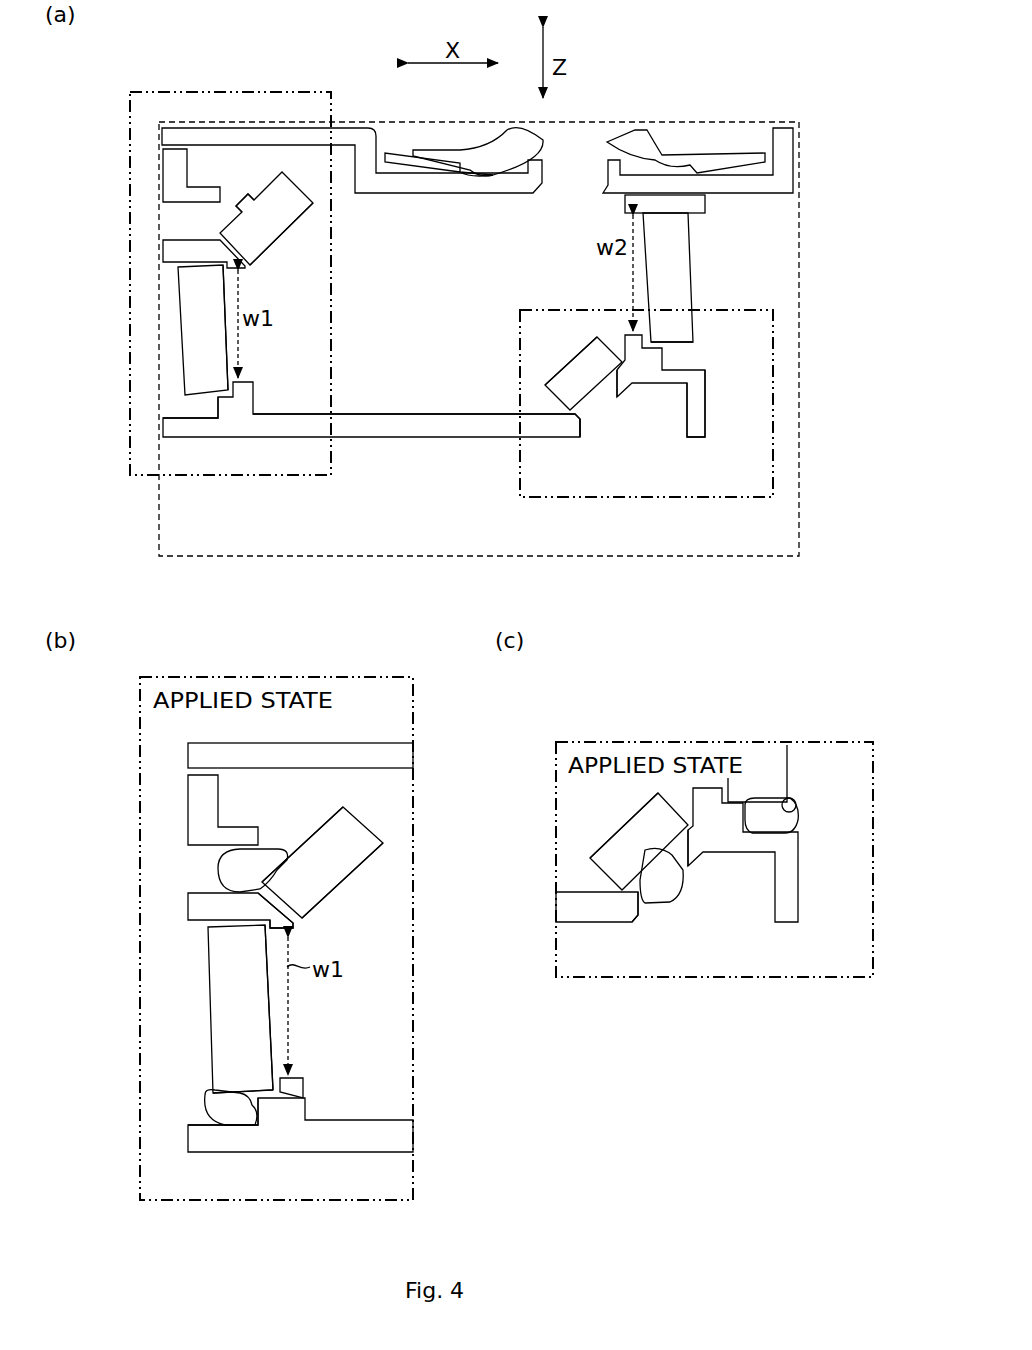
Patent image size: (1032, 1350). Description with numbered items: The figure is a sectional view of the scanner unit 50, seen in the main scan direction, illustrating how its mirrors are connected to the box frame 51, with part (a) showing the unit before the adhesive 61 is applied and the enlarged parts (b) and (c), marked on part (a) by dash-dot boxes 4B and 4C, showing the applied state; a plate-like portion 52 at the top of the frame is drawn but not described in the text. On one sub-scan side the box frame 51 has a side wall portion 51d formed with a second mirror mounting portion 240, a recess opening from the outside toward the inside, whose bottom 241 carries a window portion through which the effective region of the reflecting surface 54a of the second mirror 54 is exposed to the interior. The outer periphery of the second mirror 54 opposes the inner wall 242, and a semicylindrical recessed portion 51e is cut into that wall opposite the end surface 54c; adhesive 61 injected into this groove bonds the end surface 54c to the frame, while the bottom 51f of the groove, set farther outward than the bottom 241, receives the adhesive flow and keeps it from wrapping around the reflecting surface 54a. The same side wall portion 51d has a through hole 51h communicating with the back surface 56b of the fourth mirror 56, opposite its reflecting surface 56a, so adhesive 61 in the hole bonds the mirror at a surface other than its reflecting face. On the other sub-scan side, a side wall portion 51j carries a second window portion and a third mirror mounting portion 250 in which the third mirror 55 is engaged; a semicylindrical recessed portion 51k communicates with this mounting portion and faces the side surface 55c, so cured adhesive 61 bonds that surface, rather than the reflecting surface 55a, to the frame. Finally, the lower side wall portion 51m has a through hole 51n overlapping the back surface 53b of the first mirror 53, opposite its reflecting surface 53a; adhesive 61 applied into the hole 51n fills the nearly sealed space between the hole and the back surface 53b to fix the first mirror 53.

The scanner unit 50 is at (815, 522).
The box frame 51 is at (387, 442).
The side wall portion 51d is at (163, 250).
The recessed portion 51e is at (176, 409).
The bottom of groove portion 51f is at (212, 407).
The hole 51h is at (174, 220).
The side wall portion 51j is at (705, 398).
The recessed portion 51k is at (690, 355).
The side wall portion (lower surface portion) 51m is at (457, 440).
The hole 51n is at (600, 416).
The terminal holding portion 52 is at (797, 153).
The first mirror 53 is at (568, 385).
The reflecting surface of first mirror 53a is at (580, 352).
The back surface of first mirror 53b is at (668, 853).
The second mirror 54 is at (200, 360).
The reflecting surface of second mirror 54a is at (230, 350).
The end surface of second mirror 54c is at (240, 1093).
The third mirror 55 is at (683, 242).
The reflecting surface of third mirror 55a is at (647, 282).
The side surface of third mirror 55c is at (793, 800).
The fourth mirror 56 is at (290, 175).
The reflecting surface of fourth mirror 56a is at (277, 242).
The back surface of fourth mirror 56b is at (248, 187).
The adhesive 61 is at (213, 857).
The second mirror mounting portion 240 is at (172, 317).
The bottom of second mirror mounting portion 241 is at (303, 1090).
The inner wall of second mirror mounting portion 242 is at (202, 925).
The third mirror mounting portion 250 is at (709, 272).
The enlarged view region 4B is at (332, 278).
The enlarged view region 4C is at (752, 308).